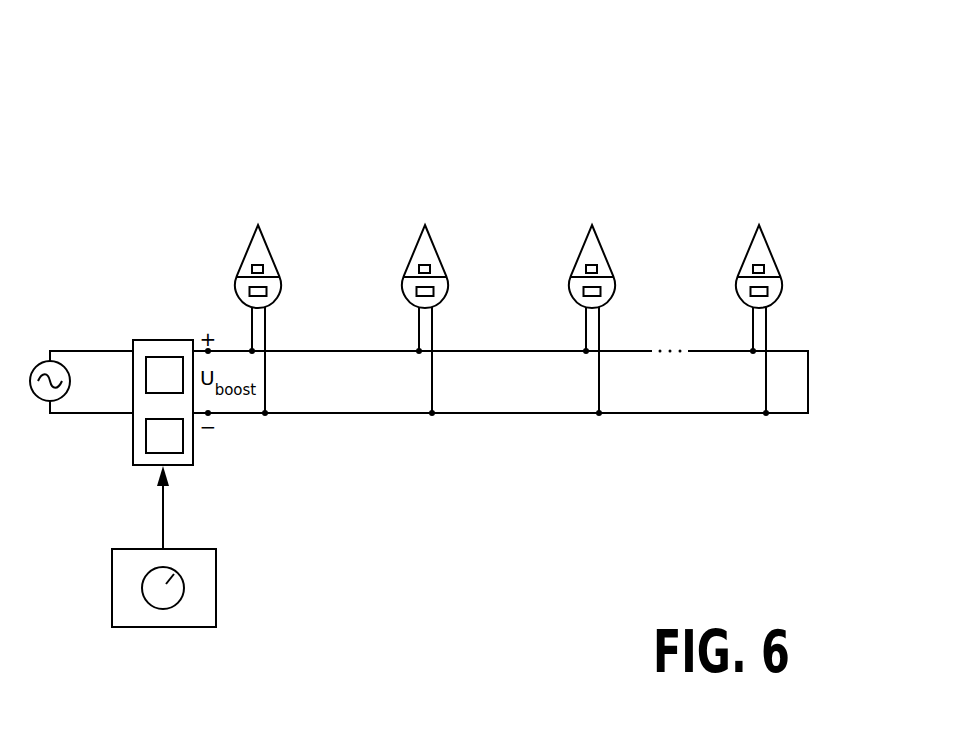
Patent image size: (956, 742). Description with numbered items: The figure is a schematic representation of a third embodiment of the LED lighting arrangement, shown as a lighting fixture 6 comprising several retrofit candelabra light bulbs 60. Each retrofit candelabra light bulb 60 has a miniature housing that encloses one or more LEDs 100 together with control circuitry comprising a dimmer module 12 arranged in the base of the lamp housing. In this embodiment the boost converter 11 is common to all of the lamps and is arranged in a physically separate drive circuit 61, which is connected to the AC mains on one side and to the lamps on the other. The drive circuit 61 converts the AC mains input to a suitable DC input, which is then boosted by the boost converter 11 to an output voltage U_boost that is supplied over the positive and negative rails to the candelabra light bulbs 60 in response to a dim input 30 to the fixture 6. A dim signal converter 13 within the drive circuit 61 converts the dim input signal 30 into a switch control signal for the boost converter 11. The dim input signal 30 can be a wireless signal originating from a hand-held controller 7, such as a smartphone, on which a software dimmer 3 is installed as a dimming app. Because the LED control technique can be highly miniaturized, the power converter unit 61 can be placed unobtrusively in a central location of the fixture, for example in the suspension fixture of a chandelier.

The lighting fixture 6 is at (785, 129).
The retrofit candelabra light bulb 60 is at (268, 242).
The LED 100 is at (264, 262).
The dimmer module 12 is at (267, 294).
The drive circuit 61 is at (148, 340).
The boost converter 11 is at (170, 357).
The dim signal converter 13 is at (183, 442).
The dim input 30 is at (163, 512).
The hand-held controller 7 is at (175, 628).
The software dimmer 3 is at (184, 595).